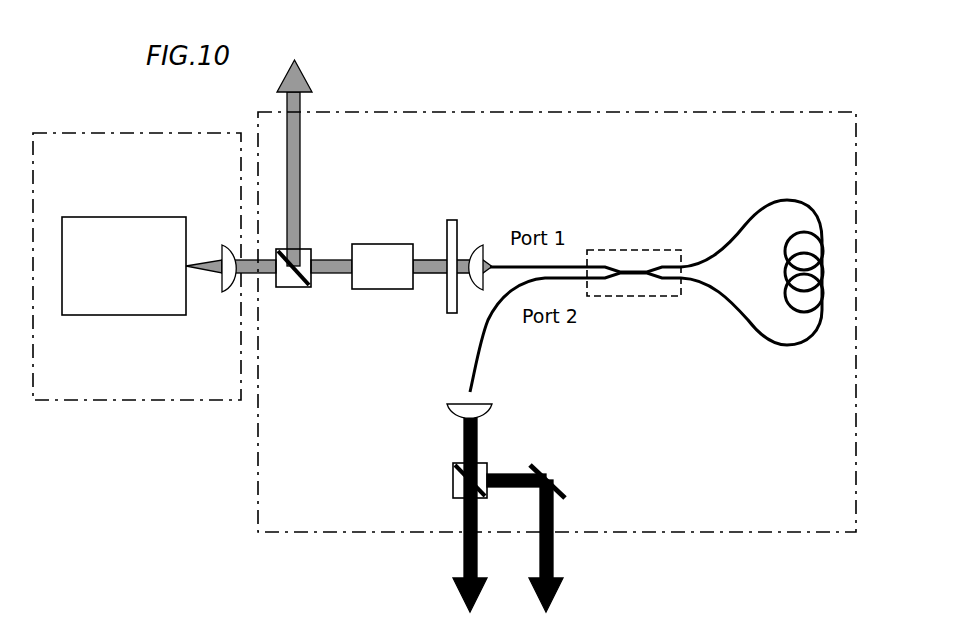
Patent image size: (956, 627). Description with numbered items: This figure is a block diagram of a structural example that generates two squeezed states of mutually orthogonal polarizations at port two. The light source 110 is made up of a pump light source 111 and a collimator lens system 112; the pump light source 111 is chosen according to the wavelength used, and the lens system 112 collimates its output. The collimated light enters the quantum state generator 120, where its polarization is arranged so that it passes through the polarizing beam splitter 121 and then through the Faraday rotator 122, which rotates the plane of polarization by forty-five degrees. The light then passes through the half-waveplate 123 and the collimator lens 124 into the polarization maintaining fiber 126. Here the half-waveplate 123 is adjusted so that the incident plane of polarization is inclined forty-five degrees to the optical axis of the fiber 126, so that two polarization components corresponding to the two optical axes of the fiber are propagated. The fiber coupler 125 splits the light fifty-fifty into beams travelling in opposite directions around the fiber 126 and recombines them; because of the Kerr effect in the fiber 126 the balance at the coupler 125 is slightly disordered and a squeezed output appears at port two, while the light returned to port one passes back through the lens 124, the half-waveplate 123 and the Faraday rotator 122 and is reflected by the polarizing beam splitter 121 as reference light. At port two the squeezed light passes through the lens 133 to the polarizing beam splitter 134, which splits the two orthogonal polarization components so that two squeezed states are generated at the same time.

The light source 110 is at (137, 266).
The pump light source 111 is at (80, 223).
The collimator lens system 112 is at (223, 292).
The quantum state generator 120 is at (557, 322).
The polarizing beam splitter 121 is at (290, 282).
The Faraday rotator 122 is at (387, 248).
The half-waveplate 123 is at (455, 227).
The collimator lens 124 is at (483, 243).
The fiber coupler 125 is at (618, 247).
The polarization maintaining fiber 126 is at (787, 347).
The lens 133 is at (487, 405).
The polarizing beam splitter 134 is at (453, 480).